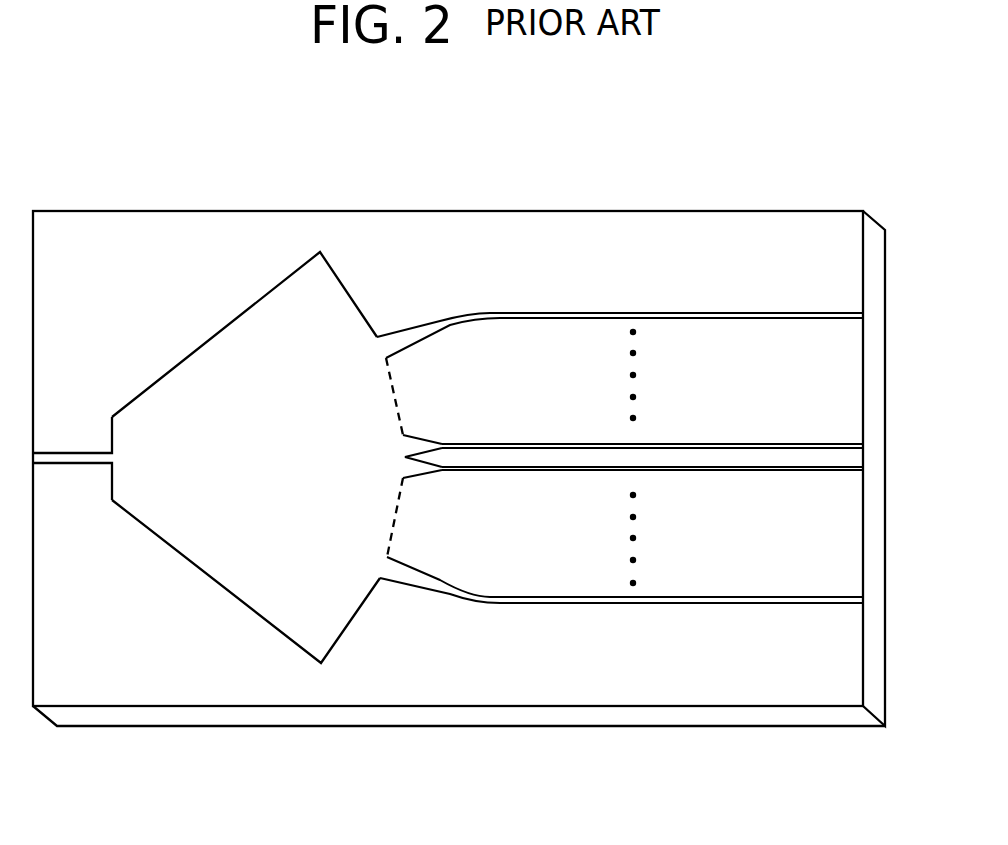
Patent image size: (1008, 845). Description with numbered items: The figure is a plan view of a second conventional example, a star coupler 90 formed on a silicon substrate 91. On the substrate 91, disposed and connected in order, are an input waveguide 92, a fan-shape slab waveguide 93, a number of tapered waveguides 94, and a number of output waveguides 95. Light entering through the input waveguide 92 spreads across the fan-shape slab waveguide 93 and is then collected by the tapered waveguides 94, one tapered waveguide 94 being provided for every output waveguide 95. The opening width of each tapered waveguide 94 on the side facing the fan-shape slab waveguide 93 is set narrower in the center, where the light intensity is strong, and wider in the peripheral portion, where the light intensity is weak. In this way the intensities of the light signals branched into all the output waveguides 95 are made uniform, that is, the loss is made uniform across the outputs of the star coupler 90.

The star coupler 90 is at (762, 173).
The silicon substrate 91 is at (815, 717).
The input waveguide 92 is at (88, 453).
The fan-shape slab waveguide 93 is at (285, 300).
The tapered waveguide 94 is at (413, 333).
The output waveguide 95 is at (708, 312).